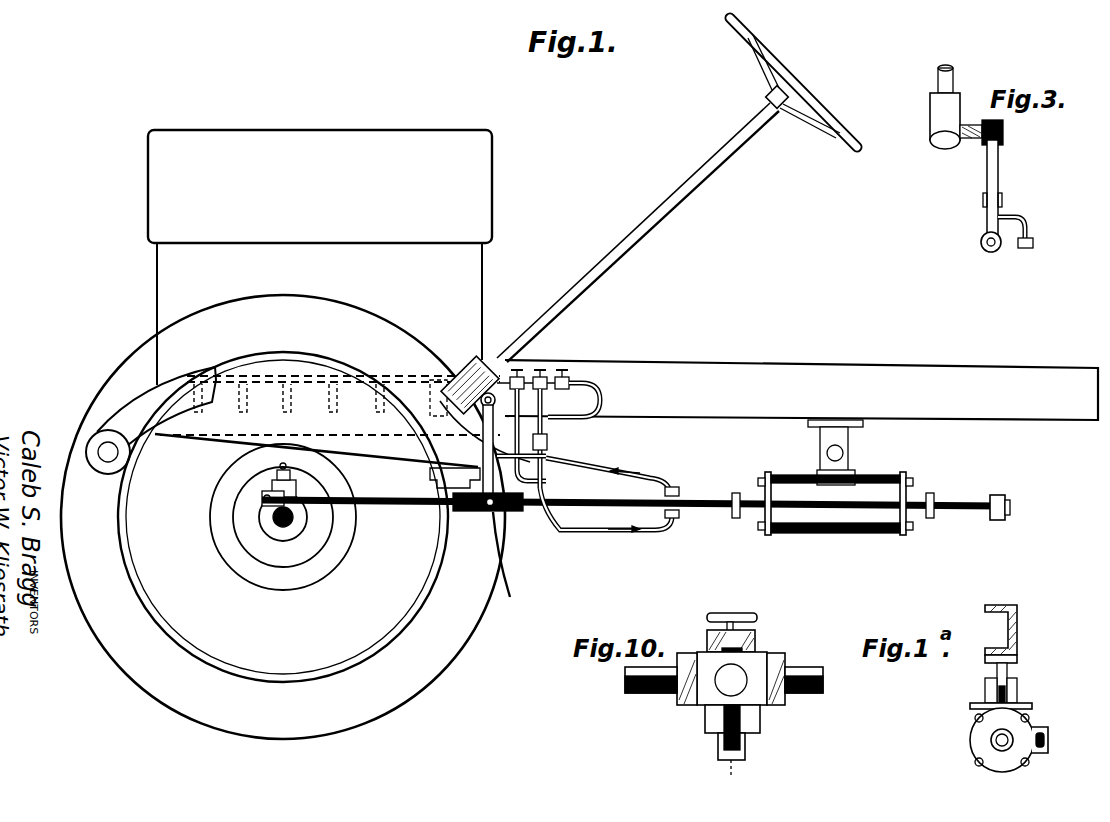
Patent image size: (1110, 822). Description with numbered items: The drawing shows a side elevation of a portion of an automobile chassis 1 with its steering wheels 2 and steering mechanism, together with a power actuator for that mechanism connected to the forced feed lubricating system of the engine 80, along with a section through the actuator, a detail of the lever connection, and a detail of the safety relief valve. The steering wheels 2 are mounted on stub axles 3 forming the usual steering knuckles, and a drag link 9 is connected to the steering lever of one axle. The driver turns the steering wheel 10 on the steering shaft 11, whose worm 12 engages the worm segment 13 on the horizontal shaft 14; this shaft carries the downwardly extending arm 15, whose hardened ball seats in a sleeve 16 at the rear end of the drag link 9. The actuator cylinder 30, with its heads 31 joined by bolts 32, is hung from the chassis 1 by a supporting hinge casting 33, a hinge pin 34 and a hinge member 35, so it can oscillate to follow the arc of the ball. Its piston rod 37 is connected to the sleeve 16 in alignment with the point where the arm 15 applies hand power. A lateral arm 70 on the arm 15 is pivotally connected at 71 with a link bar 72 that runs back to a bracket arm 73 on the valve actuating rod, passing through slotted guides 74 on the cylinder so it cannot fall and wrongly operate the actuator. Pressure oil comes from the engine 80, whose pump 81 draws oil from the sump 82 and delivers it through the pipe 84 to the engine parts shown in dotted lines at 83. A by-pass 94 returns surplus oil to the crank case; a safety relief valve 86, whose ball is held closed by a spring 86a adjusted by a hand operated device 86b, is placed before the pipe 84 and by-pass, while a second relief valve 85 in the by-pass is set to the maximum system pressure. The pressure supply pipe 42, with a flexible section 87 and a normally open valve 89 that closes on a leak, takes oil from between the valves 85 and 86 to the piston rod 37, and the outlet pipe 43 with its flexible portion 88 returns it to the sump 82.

In FIG. 1, the chassis 1 is at (836, 364).
In FIG. 1A, the chassis 1 is at (1017, 630).
In FIG. 1, the steering wheels 2 is at (125, 658).
In FIG. 1, the stub axles 3 is at (281, 522).
In FIG. 1, the drag link 9 is at (362, 505).
In FIG. 3, the drag link 9 is at (988, 252).
In FIG. 1, the steering wheel 10 is at (780, 68).
In FIG. 1, the steering shaft 11 is at (632, 243).
In FIG. 3, the steering shaft 11 is at (940, 78).
In FIG. 1, the worm 12 is at (460, 370).
In FIG. 1, the worm segment 13 is at (490, 355).
In FIG. 1, the horizontal shaft 14 is at (480, 402).
In FIG. 3, the horizontal shaft 14 is at (970, 140).
In FIG. 1, the downwardly extending arm 15 is at (482, 438).
In FIG. 3, the downwardly extending arm 15 is at (998, 172).
In FIG. 1, the sleeve 16 is at (508, 512).
In FIG. 1, the actuator cylinder 30 is at (880, 533).
In FIG. 1, the cylinder heads 31 is at (755, 517).
In FIG. 1, the bolts 32 is at (855, 485).
In FIG. 1, the supporting hinge casting 33 is at (817, 473).
In FIG. 1, the hinge pin 34 is at (828, 450).
In FIG. 1, the hinge member 35 is at (848, 435).
In FIG. 1A, the hinge member 35 is at (1007, 670).
In FIG. 1, the piston rod 37 is at (708, 509).
In FIG. 1A, the piston rod 37 is at (990, 740).
In FIG. 1, the pressure supply pipe 42 is at (630, 530).
In FIG. 1, the outlet pipe 43 is at (670, 486).
In FIG. 1, the lateral arm 70 is at (795, 533).
In FIG. 3, the lateral arm 70 is at (1024, 220).
In FIG. 1, the pivotal connection 71 is at (506, 562).
In FIG. 3, the pivotal connection 71 is at (1033, 243).
In FIG. 1, the link bar 72 is at (733, 505).
In FIG. 1A, the link bar 72 is at (1046, 744).
In FIG. 1, the bracket arm 73 is at (1003, 496).
In FIG. 1, the slotted guides 74 is at (758, 490).
In FIG. 1A, the slotted guides 74 is at (1059, 734).
In FIG. 1, the engine 80 is at (490, 203).
In FIG. 1, the pump 81 is at (445, 490).
In FIG. 1, the sump 82 is at (420, 462).
In FIG. 1, the engine lubricated parts 83 is at (378, 377).
In FIG. 1, the pipe 84 is at (548, 457).
In FIG. 10, the pipe 84 is at (745, 748).
In FIG. 1, the relief valve 85 is at (565, 378).
In FIG. 1, the safety relief valve 86 is at (522, 378).
In FIG. 10, the spring 86a is at (760, 652).
In FIG. 10, the hand operated device 86b is at (757, 622).
In FIG. 1, the flexible pipe section 87 is at (567, 528).
In FIG. 1, the flexible portion 88 is at (607, 472).
In FIG. 1, the additional valve 89 is at (548, 441).
In FIG. 1, the by-pass 94 is at (600, 404).
In FIG. 10, the by-pass 94 is at (812, 694).